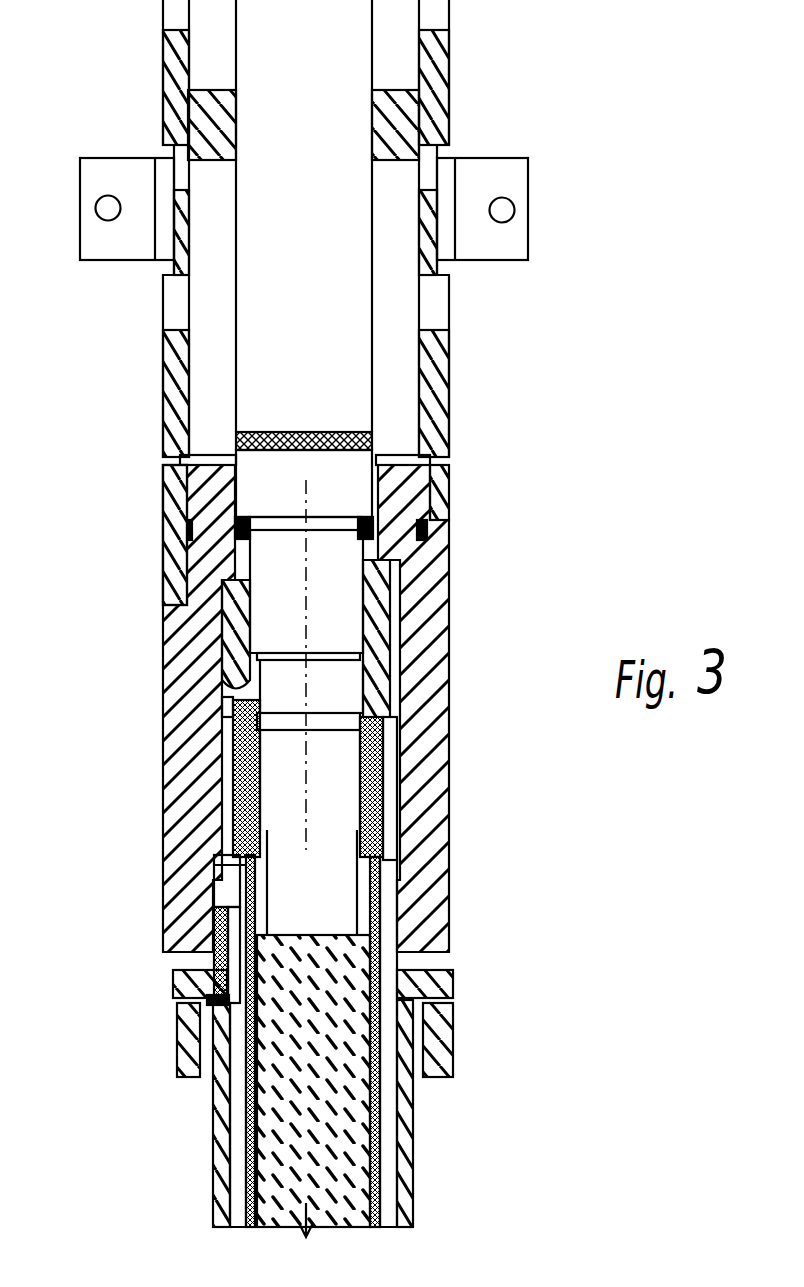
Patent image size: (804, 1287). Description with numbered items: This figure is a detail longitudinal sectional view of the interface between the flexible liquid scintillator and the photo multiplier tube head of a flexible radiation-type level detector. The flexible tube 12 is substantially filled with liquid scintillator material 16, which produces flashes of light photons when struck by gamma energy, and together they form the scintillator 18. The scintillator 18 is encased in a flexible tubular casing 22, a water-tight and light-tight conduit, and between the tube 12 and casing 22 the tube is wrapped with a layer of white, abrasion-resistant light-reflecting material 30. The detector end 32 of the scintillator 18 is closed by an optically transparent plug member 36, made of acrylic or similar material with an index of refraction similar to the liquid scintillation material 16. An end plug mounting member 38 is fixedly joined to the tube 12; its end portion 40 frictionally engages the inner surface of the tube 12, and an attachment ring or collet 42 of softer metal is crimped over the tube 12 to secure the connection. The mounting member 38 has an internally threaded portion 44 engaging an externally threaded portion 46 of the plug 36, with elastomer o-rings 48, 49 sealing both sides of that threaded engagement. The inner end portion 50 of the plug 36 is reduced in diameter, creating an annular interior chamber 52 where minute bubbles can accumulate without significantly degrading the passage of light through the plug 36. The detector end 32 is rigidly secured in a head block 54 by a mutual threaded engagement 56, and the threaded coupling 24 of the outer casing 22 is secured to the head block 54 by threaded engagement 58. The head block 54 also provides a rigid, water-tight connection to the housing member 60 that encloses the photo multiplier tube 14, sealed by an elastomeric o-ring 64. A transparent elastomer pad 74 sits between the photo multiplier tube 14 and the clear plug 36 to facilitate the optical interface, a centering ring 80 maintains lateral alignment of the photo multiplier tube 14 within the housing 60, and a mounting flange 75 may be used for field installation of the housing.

The flexible tube 12 is at (383, 1180).
The photo multiplier tube 14 is at (343, 357).
The liquid scintillator material 16 is at (230, 1180).
The scintillator 18 is at (522, 1090).
The flexible tubular casing 22 is at (403, 1217).
The threaded coupling 24 is at (486, 983).
The light-reflecting material 30 is at (217, 1210).
The detector end 32 is at (124, 958).
The transparent plug member 36 is at (450, 495).
The end plug mounting member 38 is at (233, 643).
The end portion 40 is at (390, 774).
The attachment ring or collet 42 is at (390, 713).
The internally threaded portion 44 is at (363, 594).
The externally threaded portion 46 is at (233, 557).
The elastomer o-ring 48 is at (233, 733).
The elastomer o-ring 49 is at (237, 516).
The inner end portion 50 is at (337, 890).
The annular interior chamber 52 is at (170, 876).
The head block 54 is at (449, 668).
The threaded engagement 56 is at (230, 673).
The threaded engagement 58 is at (449, 925).
The housing member 60 is at (445, 73).
The elastomeric o-ring 64 is at (450, 535).
The transparent elastomer pad 74 is at (449, 425).
The mounting flange 75 is at (515, 174).
The centering ring 80 is at (190, 100).